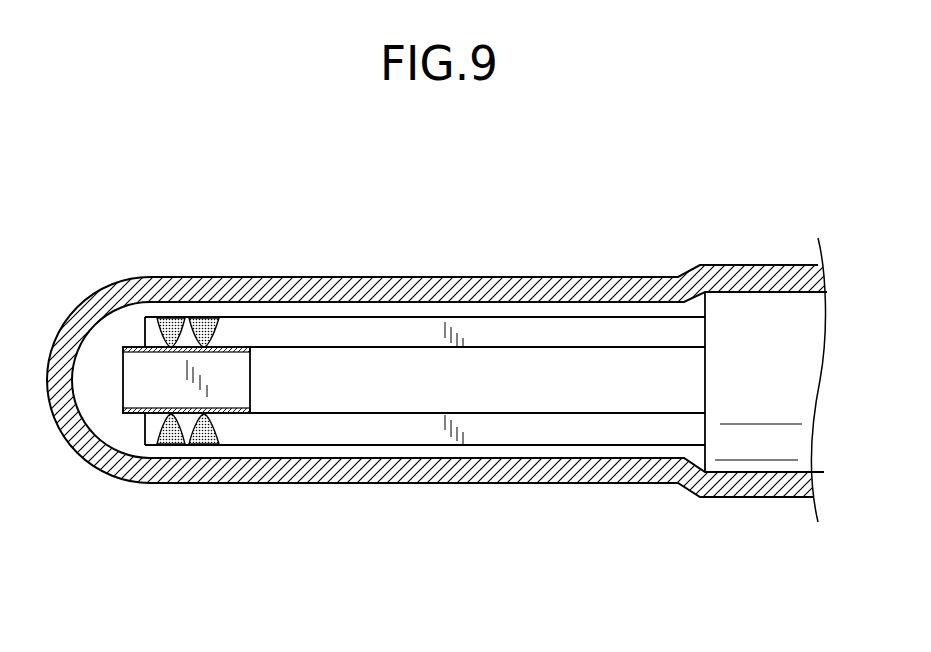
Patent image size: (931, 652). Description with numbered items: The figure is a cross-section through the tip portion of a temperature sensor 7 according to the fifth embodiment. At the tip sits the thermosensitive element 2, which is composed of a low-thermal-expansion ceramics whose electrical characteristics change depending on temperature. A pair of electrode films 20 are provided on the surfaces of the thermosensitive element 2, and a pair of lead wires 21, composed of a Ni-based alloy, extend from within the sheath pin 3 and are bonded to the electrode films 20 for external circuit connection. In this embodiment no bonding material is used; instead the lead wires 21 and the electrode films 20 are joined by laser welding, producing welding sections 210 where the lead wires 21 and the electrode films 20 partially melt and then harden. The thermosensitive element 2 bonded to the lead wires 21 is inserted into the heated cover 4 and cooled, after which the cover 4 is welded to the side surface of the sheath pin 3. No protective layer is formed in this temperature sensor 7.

The temperature sensor 7 is at (578, 229).
The cover 4 is at (372, 475).
The sheath pin 3 is at (742, 437).
The lead wires 21 is at (393, 330).
The thermosensitive element 2 is at (137, 373).
The electrode films 20 is at (143, 347).
The welding sections 210 is at (205, 330).